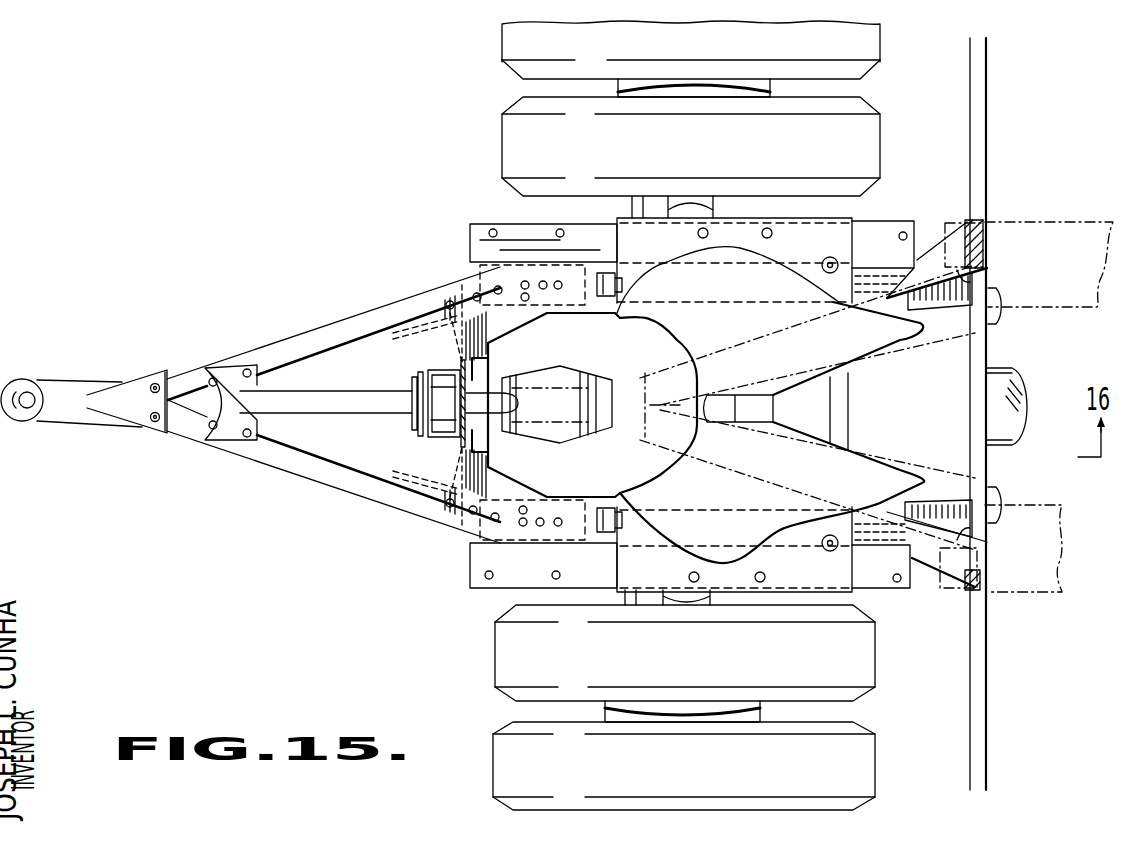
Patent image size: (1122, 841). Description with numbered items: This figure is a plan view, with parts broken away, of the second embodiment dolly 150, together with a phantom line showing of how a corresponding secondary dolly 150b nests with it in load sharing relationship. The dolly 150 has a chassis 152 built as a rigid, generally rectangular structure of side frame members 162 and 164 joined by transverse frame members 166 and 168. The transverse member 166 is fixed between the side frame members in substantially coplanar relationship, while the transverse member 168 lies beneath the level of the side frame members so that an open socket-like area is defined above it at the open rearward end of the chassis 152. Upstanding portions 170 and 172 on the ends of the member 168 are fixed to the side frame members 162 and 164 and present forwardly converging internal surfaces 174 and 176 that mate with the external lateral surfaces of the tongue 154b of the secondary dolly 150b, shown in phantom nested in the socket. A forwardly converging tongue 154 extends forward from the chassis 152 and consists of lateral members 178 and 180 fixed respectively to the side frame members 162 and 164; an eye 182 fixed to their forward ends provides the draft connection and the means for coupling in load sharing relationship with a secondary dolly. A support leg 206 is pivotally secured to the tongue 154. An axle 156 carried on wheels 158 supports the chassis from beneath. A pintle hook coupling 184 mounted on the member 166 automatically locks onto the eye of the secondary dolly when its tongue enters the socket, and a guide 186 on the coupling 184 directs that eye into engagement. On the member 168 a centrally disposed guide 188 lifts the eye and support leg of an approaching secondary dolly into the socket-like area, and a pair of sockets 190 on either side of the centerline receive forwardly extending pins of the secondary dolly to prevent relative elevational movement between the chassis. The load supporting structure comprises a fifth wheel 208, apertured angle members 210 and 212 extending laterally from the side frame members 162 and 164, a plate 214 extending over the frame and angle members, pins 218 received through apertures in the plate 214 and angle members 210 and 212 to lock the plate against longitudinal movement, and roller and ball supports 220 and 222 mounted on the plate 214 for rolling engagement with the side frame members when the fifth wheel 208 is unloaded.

The dolly 150 is at (374, 207).
The secondary dolly 150b is at (1090, 222).
The chassis 152 is at (498, 212).
The tongue 154 is at (268, 338).
The tongue of the secondary dolly 154b is at (754, 352).
The axle 156 is at (682, 202).
The wheels 158 is at (882, 110).
The side frame member 162 is at (580, 504).
The side frame member 164 is at (588, 318).
The transverse frame member 166 is at (458, 440).
The transverse frame member 168 is at (976, 352).
The upstanding portion 170 is at (962, 582).
The upstanding portion 172 is at (958, 232).
The internal surface 174 is at (966, 518).
The internal surface 176 is at (966, 284).
The lateral member 178 is at (284, 478).
The lateral member 180 is at (334, 330).
The eye 182 is at (50, 388).
The pintle hook coupling 184 is at (430, 356).
The guide 186 is at (585, 386).
The guide 188 is at (1018, 386).
The sockets 190 is at (997, 320).
The support leg 206 is at (340, 404).
The fifth wheel 208 is at (870, 474).
The apertured angle member 210 is at (472, 586).
The apertured angle member 212 is at (472, 226).
The plate 214 is at (848, 228).
The pins 218 is at (768, 230).
The roller support 220 is at (601, 276).
The ball support 222 is at (836, 262).